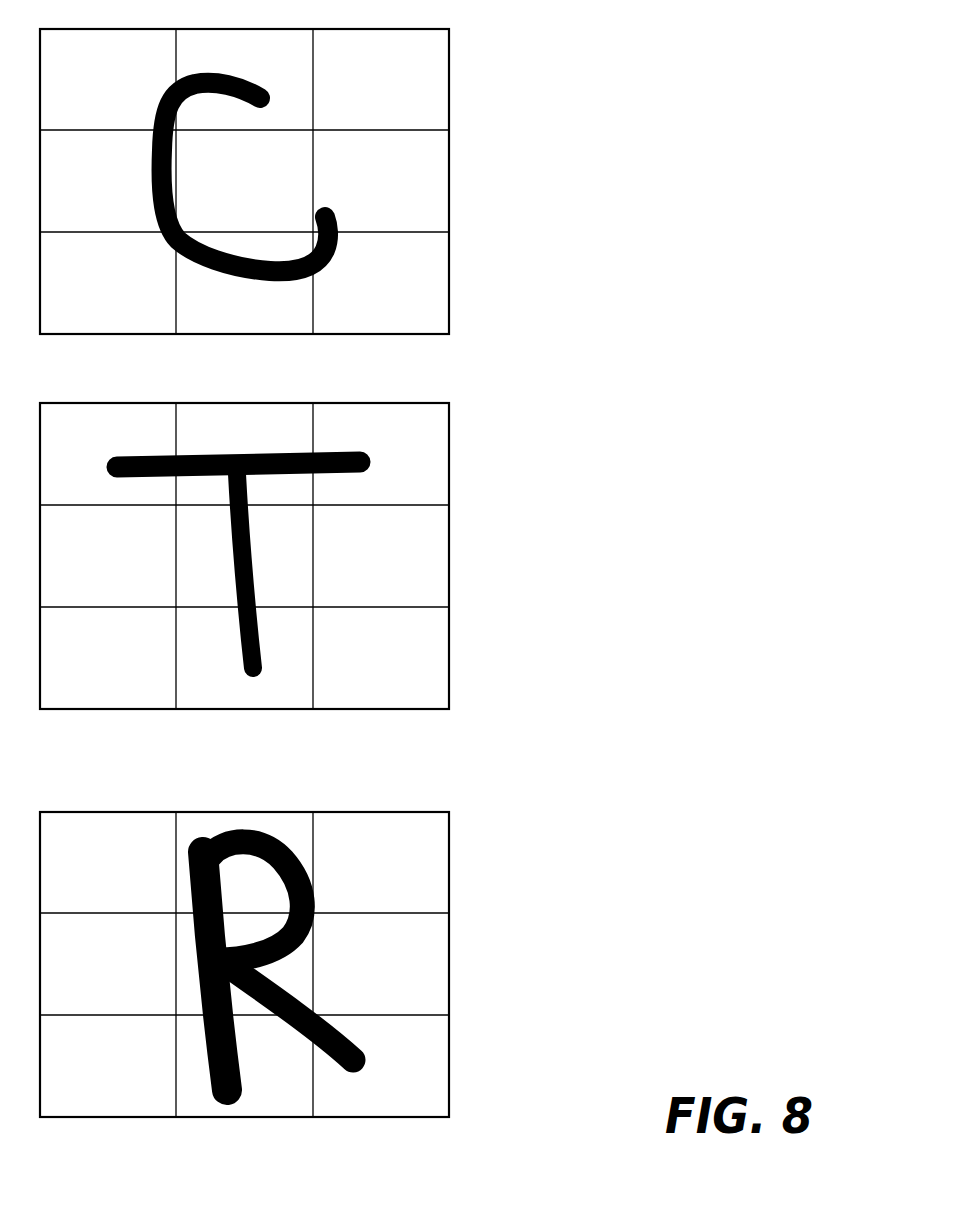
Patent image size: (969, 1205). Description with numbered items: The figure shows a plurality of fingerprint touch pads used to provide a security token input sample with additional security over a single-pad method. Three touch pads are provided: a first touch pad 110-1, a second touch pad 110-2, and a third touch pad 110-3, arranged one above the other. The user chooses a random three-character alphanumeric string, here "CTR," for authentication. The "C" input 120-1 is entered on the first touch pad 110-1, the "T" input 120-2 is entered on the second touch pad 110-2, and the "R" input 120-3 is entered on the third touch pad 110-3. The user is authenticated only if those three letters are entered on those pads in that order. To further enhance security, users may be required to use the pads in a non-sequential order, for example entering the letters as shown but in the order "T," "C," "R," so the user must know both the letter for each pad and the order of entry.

The first touch pad 110-1 is at (354, 205).
The second touch pad 110-2 is at (370, 579).
The third touch pad 110-3 is at (354, 987).
The "C" input 120-1 is at (245, 232).
The "T" input 120-2 is at (238, 608).
The "R" input 120-3 is at (242, 1002).